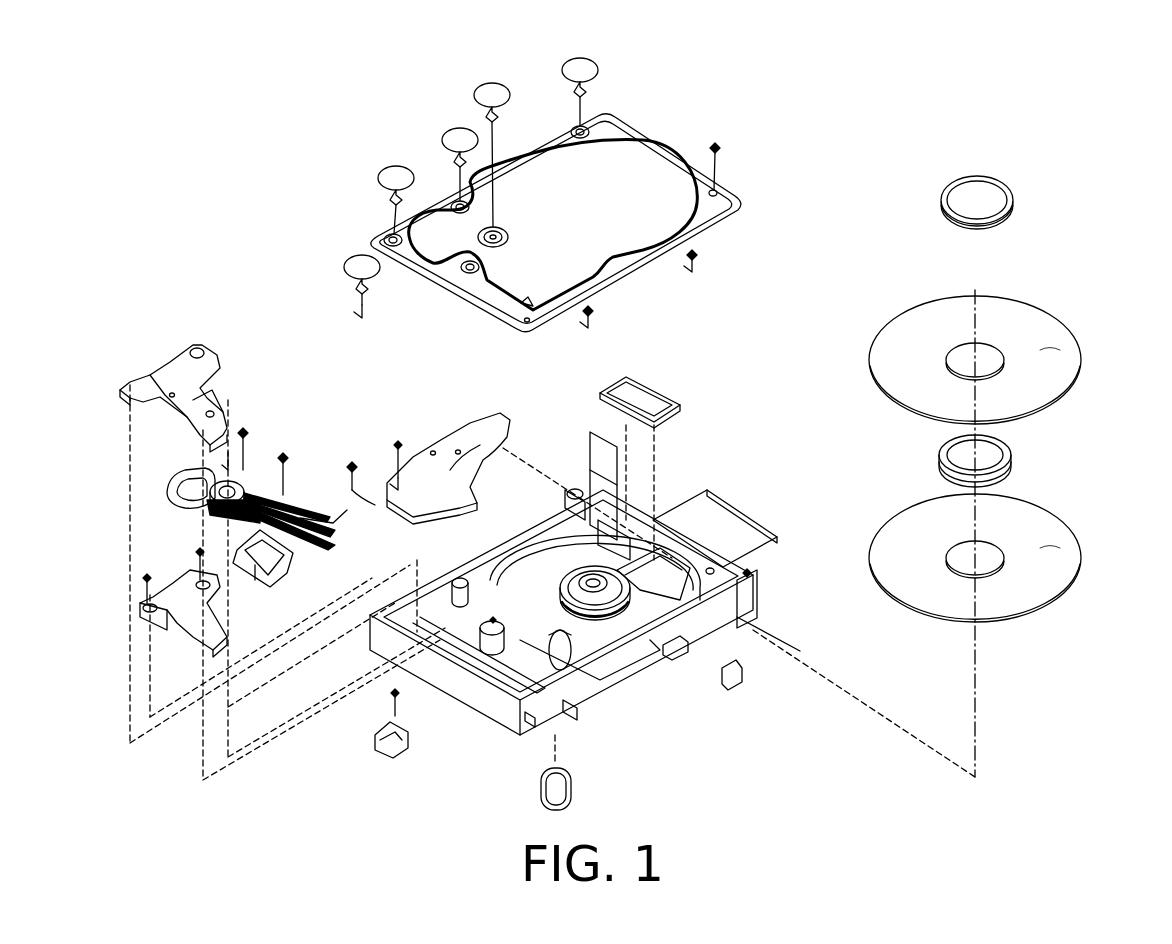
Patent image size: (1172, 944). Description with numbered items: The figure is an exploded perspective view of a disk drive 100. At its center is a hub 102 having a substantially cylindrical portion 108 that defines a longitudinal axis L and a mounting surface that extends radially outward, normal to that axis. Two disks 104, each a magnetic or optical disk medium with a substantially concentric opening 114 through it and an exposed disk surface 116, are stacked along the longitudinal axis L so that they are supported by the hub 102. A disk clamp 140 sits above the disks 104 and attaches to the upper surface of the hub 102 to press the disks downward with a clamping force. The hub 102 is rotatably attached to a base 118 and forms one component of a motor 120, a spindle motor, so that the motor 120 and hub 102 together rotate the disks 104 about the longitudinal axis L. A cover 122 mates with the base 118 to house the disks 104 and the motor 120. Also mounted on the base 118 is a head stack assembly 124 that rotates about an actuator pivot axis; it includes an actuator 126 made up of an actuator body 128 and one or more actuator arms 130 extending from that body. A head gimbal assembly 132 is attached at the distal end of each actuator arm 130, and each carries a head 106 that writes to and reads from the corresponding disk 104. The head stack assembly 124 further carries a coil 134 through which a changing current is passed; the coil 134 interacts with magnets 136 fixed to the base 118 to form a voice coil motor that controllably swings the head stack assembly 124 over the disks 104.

The disk drive 100 is at (163, 100).
The hub 102 is at (695, 645).
The disk 104 is at (870, 356).
The head 106 is at (333, 512).
The substantially cylindrical portion 108 is at (600, 628).
The concentric opening 114 is at (990, 352).
The disk surface 116 is at (1048, 352).
The base 118 is at (780, 642).
The motor 120 is at (578, 515).
The cover 122 is at (727, 218).
The head stack assembly 124 is at (317, 553).
The actuator 126 is at (227, 460).
The actuator body 128 is at (245, 465).
The actuator arm 130 is at (272, 470).
The head gimbal assembly 132 is at (320, 507).
The coil 134 is at (168, 477).
The magnet 136 is at (197, 577).
The disk clamp 140 is at (938, 222).
The longitudinal axis L is at (977, 695).